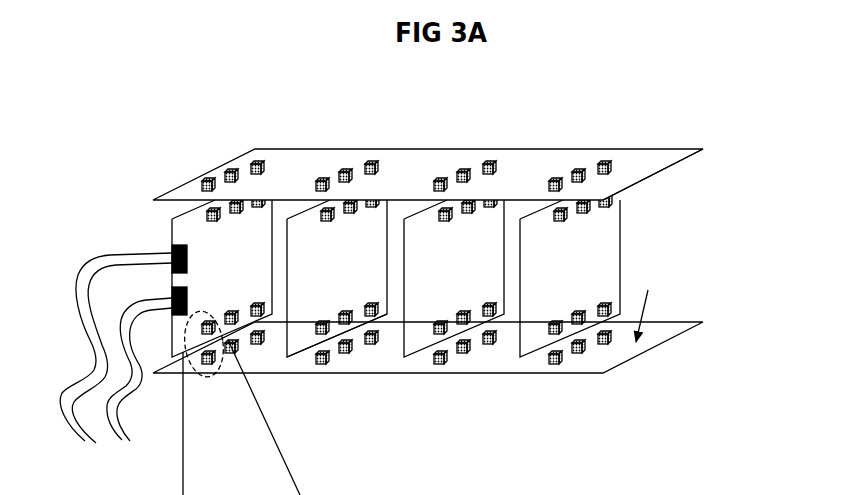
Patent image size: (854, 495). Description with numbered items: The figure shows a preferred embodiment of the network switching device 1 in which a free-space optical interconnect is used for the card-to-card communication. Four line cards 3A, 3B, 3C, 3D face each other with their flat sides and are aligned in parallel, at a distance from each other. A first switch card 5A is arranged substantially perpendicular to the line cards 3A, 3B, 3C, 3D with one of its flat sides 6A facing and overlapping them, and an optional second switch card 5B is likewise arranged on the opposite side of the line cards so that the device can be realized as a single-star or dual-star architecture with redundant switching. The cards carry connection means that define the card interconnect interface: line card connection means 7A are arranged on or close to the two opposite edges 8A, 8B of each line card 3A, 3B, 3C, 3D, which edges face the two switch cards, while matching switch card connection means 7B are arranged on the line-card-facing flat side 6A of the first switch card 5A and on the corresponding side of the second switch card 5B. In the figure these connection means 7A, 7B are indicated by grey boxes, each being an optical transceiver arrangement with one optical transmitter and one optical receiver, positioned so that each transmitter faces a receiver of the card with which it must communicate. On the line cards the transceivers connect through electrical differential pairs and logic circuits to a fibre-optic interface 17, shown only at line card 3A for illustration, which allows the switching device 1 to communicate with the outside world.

The network switching device 1 is at (712, 118).
The line card 3A is at (235, 271).
The line card 3B is at (324, 274).
The line card 3C is at (473, 271).
The line card 3D is at (592, 271).
The first switch card 5A is at (428, 162).
The second switch card 5B is at (500, 374).
The flat side of first switch card 6A is at (657, 173).
The line card connection means 7A is at (205, 207).
The switch card connection means 7B is at (230, 169).
The edge of line card 8A is at (302, 209).
The edge of line card 8B is at (304, 352).
The fibre-optic interface 17 is at (66, 372).